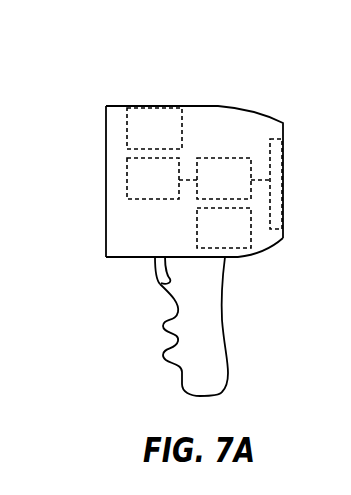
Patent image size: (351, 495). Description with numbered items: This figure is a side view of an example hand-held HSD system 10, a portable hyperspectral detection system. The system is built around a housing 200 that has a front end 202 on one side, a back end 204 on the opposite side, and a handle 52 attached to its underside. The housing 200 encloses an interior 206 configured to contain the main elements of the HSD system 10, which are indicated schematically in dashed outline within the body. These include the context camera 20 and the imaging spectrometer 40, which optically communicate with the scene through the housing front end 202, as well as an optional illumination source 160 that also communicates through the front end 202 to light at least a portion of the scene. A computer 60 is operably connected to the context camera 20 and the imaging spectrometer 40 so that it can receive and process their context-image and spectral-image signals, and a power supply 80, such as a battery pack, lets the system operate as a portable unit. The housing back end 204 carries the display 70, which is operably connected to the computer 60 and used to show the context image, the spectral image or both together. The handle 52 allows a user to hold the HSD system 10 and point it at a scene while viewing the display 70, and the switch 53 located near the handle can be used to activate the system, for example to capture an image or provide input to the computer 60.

The hand-held HSD system 10 is at (198, 86).
The context camera 20 is at (115, 134).
The imaging spectrometer 40 is at (126, 178).
The handle 52 is at (222, 307).
The switch 53 is at (153, 280).
The computer 60 is at (235, 193).
The display 70 is at (284, 157).
The power supply 80 is at (235, 243).
The illumination source 160 is at (173, 140).
The housing 200 is at (218, 105).
The front end 202 is at (105, 220).
The back end 204 is at (284, 235).
The interior 206 is at (138, 225).